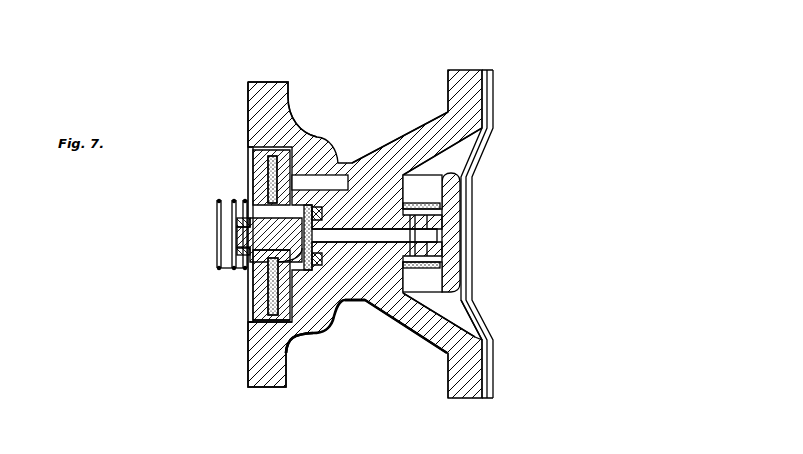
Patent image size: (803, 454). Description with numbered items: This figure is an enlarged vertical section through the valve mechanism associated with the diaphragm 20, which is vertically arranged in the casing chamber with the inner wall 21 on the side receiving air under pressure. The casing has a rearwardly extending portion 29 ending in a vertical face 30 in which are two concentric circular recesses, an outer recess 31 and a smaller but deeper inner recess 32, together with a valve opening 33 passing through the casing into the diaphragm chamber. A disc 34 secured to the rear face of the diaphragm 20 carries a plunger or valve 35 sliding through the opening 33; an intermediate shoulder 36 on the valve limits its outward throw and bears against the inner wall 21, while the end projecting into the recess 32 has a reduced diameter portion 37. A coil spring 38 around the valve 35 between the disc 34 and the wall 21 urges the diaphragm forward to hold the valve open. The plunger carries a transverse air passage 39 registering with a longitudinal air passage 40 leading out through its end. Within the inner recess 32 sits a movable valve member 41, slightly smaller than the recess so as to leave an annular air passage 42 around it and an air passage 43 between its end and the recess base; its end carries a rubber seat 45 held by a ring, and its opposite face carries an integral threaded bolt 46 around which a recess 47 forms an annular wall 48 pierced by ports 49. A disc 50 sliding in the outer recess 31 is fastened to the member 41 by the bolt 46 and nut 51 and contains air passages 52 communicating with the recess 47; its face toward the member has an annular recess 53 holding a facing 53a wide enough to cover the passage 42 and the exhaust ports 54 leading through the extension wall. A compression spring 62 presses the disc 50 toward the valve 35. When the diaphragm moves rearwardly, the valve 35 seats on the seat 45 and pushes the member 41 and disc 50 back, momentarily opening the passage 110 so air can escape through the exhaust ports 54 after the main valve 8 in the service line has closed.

The main valve 8 is at (288, 75).
The diaphragm 20 is at (494, 116).
The inner wall 21 is at (404, 182).
The rearwardly extending portion 29 is at (290, 100).
The vertical face 30 is at (248, 97).
The outer recess 31 is at (298, 128).
The inner recess 32 is at (318, 190).
The valve opening 33 is at (387, 330).
The disc 34 is at (455, 279).
The plunger or valve 35 is at (390, 250).
The intermediate shoulder 36 is at (422, 277).
The reduced diameter portion 37 is at (345, 307).
The coil spring 38 is at (433, 268).
The transverse air passage 39 is at (421, 197).
The longitudinal air passage 40 is at (437, 234).
The movable valve member 41 is at (252, 268).
The annular air passage 42 is at (282, 275).
The air passage 43 is at (345, 265).
The seat 45 is at (300, 205).
The threaded bolt 46 is at (237, 234).
The recess 47 is at (218, 193).
The annular wall 48 is at (292, 263).
The ports 49 is at (283, 283).
The disc 50 is at (250, 150).
The nut 51 is at (237, 217).
The air passages 52 is at (237, 257).
The annular recess 53 is at (285, 305).
The facing 53a is at (294, 325).
The exhaust ports 54 is at (367, 308).
The compression spring 62 is at (218, 246).
The passage 110 is at (266, 178).